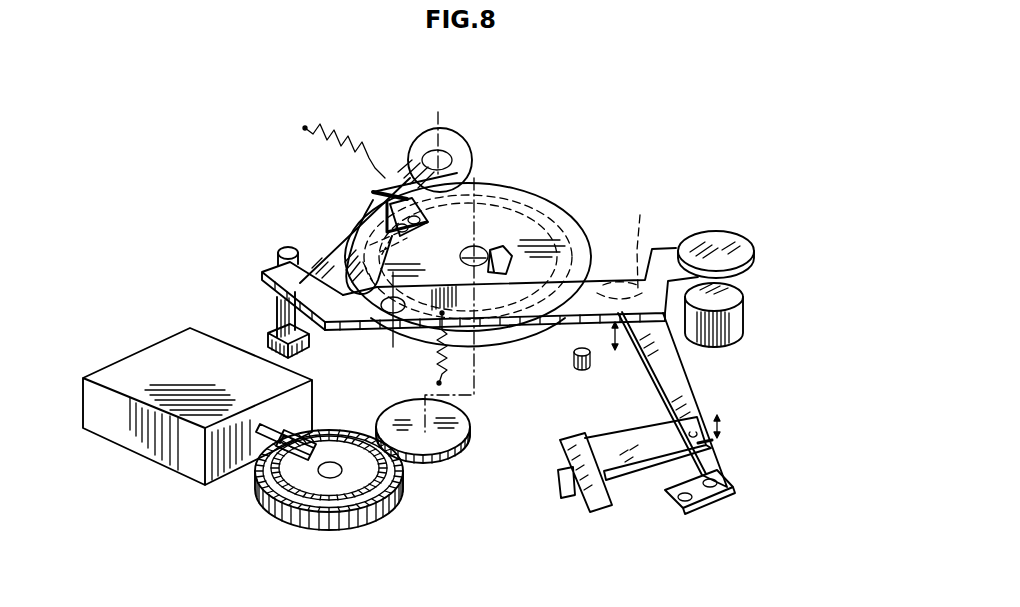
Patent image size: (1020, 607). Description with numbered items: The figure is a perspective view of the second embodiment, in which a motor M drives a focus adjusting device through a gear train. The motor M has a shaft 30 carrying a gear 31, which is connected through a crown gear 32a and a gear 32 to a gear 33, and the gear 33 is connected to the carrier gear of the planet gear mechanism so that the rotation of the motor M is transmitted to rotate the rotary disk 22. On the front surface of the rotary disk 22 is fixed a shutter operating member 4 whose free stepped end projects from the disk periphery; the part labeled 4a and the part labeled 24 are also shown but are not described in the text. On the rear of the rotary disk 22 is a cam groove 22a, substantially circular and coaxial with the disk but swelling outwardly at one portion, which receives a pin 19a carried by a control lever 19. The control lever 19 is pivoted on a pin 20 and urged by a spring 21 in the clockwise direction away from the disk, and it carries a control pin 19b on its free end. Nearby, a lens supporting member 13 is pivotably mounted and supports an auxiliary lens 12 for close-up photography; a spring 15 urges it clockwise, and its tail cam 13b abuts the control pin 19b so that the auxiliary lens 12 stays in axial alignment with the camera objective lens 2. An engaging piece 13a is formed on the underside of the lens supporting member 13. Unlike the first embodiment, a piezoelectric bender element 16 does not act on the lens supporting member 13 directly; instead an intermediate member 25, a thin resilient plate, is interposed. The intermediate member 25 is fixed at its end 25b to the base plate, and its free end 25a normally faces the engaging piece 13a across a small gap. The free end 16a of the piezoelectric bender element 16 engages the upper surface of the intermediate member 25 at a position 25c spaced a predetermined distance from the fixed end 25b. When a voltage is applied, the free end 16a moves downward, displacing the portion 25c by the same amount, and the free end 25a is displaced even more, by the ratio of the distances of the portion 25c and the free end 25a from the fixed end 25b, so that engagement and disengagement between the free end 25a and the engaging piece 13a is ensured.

The camera objective lens 2 is at (727, 295).
The shutter operating member 4 is at (385, 196).
The pivot lever 4a is at (397, 183).
The auxiliary lens 12 is at (738, 247).
The lens supporting member 13 is at (545, 307).
The engaging piece 13a is at (633, 245).
The tail cam 13b is at (265, 268).
The spring 15 is at (433, 353).
The piezoelectric bender element 16 is at (630, 462).
The free end of the piezoelectric bender element 16a is at (693, 432).
The control lever 19 is at (347, 240).
The pin 19a is at (345, 265).
The control pin 19b is at (285, 248).
The pin 20 is at (443, 123).
The spring 21 is at (322, 125).
The rotary disk 22 is at (583, 217).
The cam groove 22a is at (543, 198).
The stop pin 24 is at (573, 365).
The intermediate member 25 is at (677, 388).
The free end of the intermediate member 25a is at (663, 330).
The fixed end of the intermediate member 25b is at (737, 487).
The portion of the intermediate member 25c is at (715, 443).
The shaft 30 is at (267, 433).
The gear 31 is at (270, 505).
The gear 32 is at (337, 533).
The crown gear 32a is at (305, 507).
The gear 33 is at (447, 463).
The motor M is at (170, 455).